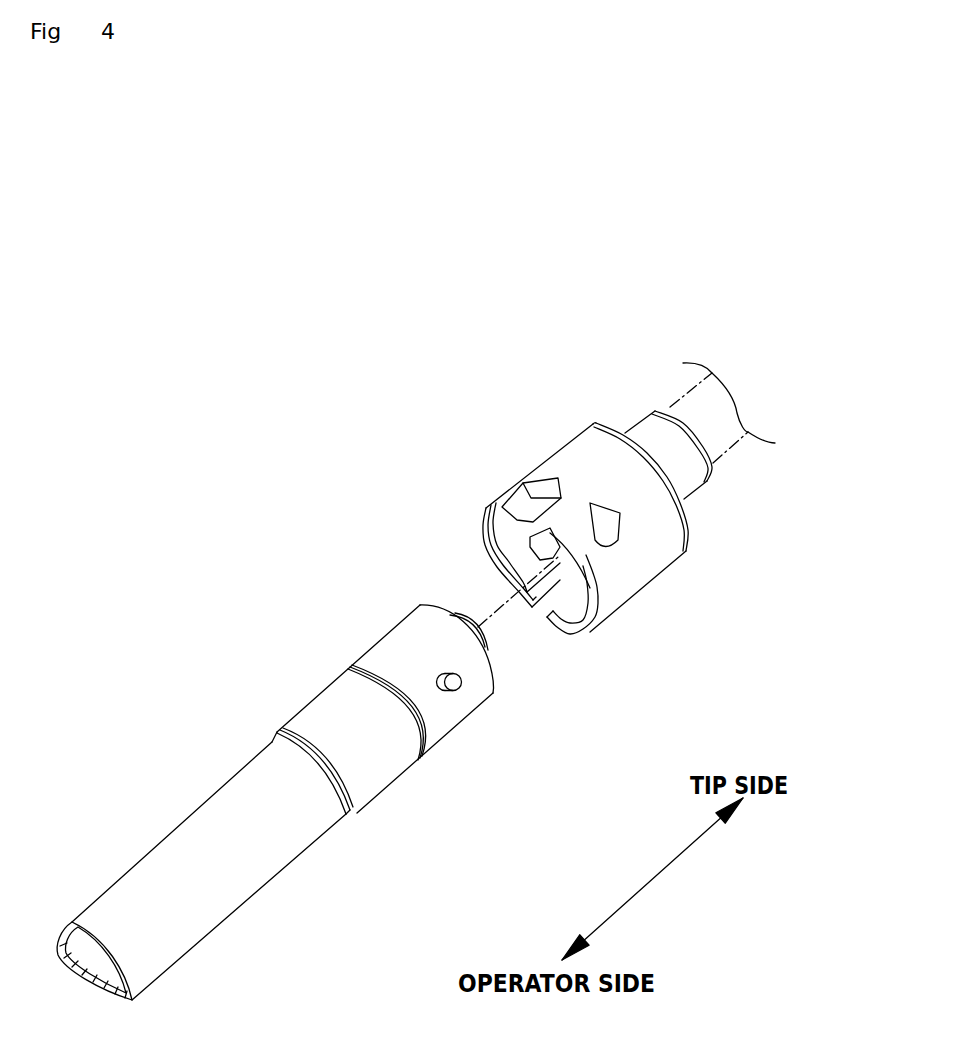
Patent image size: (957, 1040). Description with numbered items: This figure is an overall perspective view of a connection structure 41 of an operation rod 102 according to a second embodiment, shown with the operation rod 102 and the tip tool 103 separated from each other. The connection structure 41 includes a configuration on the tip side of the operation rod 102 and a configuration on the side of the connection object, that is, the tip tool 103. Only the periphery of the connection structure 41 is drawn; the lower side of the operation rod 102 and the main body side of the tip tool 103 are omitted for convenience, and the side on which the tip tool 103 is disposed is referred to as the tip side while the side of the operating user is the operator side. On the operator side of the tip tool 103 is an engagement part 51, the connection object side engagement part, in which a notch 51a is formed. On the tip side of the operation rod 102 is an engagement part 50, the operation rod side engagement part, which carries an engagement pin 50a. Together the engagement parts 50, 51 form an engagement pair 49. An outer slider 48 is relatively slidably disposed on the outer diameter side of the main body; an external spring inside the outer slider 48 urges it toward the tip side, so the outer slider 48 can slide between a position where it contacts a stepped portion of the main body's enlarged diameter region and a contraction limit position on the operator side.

The connection structure 41 is at (277, 463).
The outer slider 48 is at (388, 775).
The engagement pair 49 is at (477, 397).
The engagement part 50 is at (400, 592).
The engagement pin 50a is at (467, 687).
The engagement part 51 is at (560, 423).
The notch 51a is at (626, 542).
The operation rod 102 is at (254, 763).
The tip tool 103 is at (628, 373).